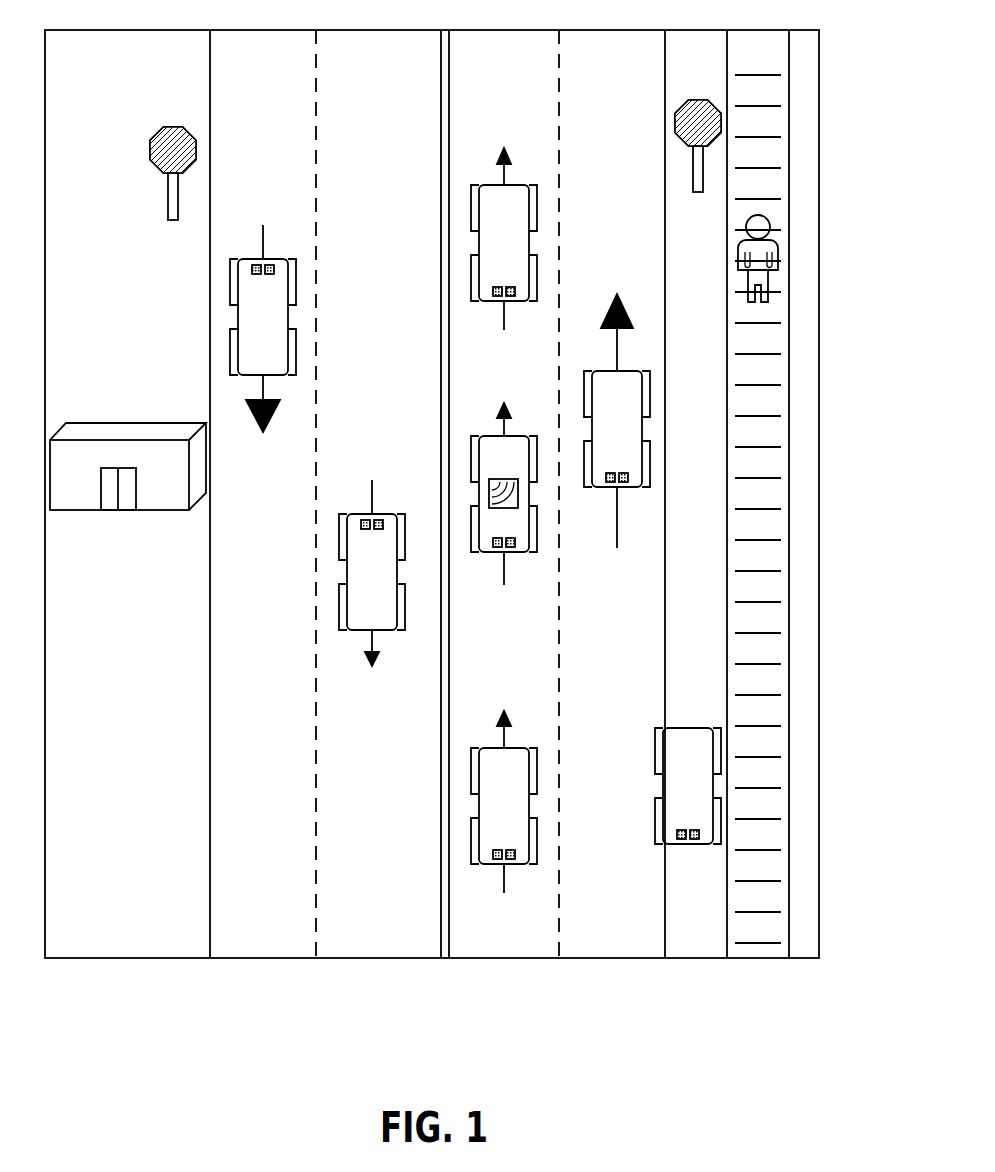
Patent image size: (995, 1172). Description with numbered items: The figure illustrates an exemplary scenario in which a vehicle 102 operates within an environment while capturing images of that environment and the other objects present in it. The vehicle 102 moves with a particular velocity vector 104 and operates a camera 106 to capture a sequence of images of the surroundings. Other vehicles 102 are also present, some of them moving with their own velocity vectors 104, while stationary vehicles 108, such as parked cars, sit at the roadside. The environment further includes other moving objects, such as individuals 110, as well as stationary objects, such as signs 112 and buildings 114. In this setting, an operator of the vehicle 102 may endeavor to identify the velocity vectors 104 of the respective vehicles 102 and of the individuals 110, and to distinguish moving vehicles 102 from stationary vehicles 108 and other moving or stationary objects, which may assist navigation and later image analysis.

The vehicle 102 is at (107, 29).
The velocity vector 104 is at (246, 402).
The camera 106 is at (489, 491).
The stationary vehicle 108 is at (673, 727).
The individual 110 is at (745, 250).
The sign 112 is at (155, 138).
The building 114 is at (115, 423).